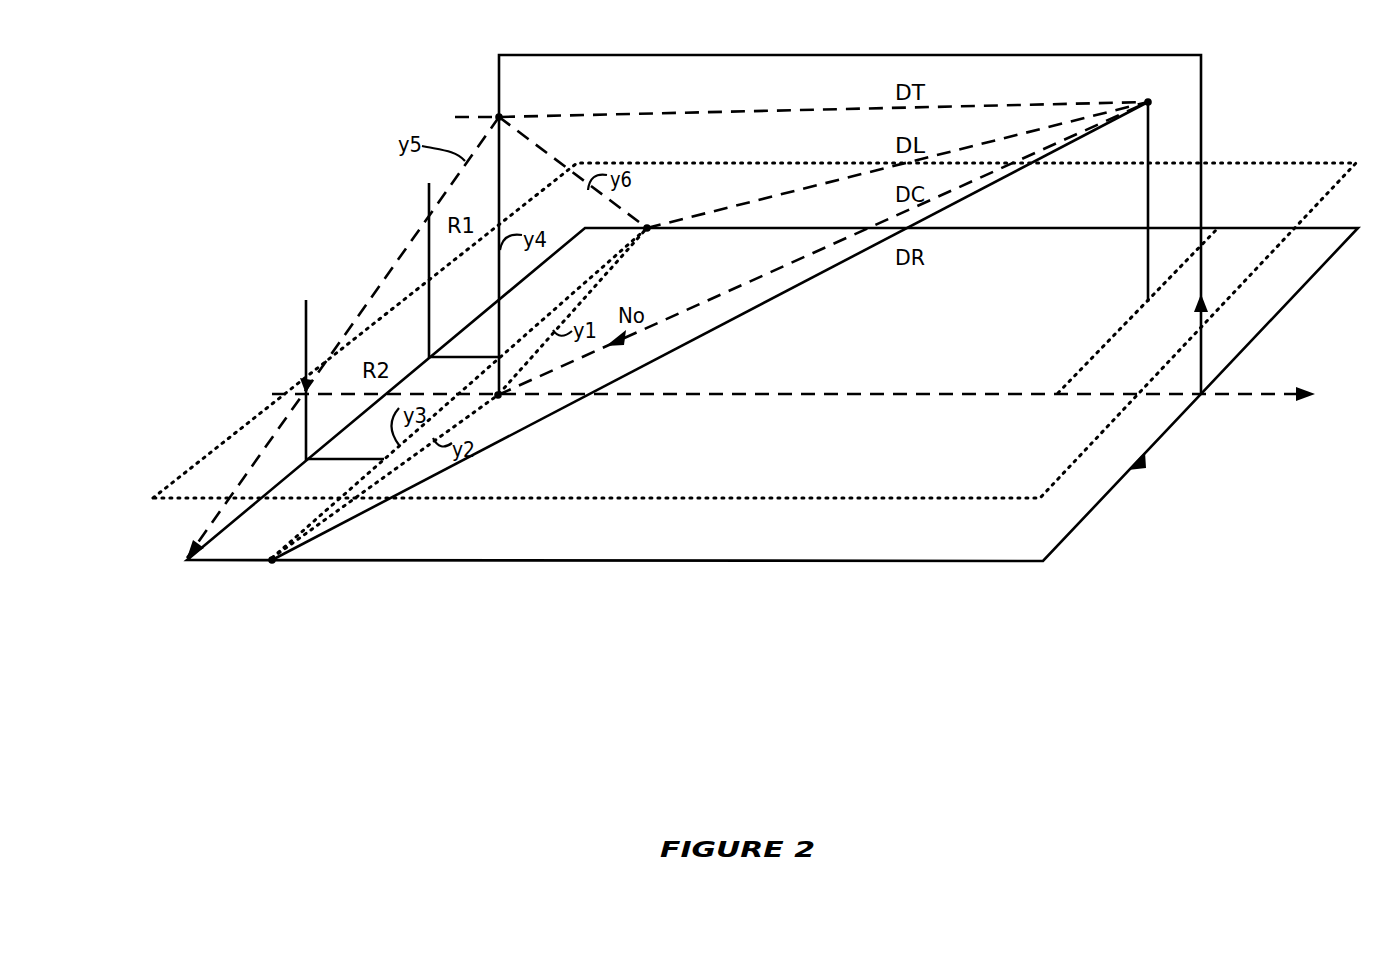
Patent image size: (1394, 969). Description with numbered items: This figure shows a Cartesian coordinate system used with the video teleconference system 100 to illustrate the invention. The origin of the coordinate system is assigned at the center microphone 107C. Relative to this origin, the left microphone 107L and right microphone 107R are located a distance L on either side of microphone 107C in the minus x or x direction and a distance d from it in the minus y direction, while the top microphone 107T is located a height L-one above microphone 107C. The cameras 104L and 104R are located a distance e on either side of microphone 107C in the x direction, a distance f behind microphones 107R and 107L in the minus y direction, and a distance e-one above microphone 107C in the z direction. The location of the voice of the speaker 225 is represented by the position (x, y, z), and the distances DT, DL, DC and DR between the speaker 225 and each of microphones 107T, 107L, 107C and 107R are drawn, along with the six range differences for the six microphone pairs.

The video teleconference system 100 is at (318, 203).
The camera 104L is at (429, 183).
The camera 104R is at (306, 300).
The microphone 107T is at (500, 117).
The microphone 107L is at (643, 218).
The microphone 107C is at (513, 396).
The microphone 107R is at (272, 562).
The speaker 225 is at (1148, 100).